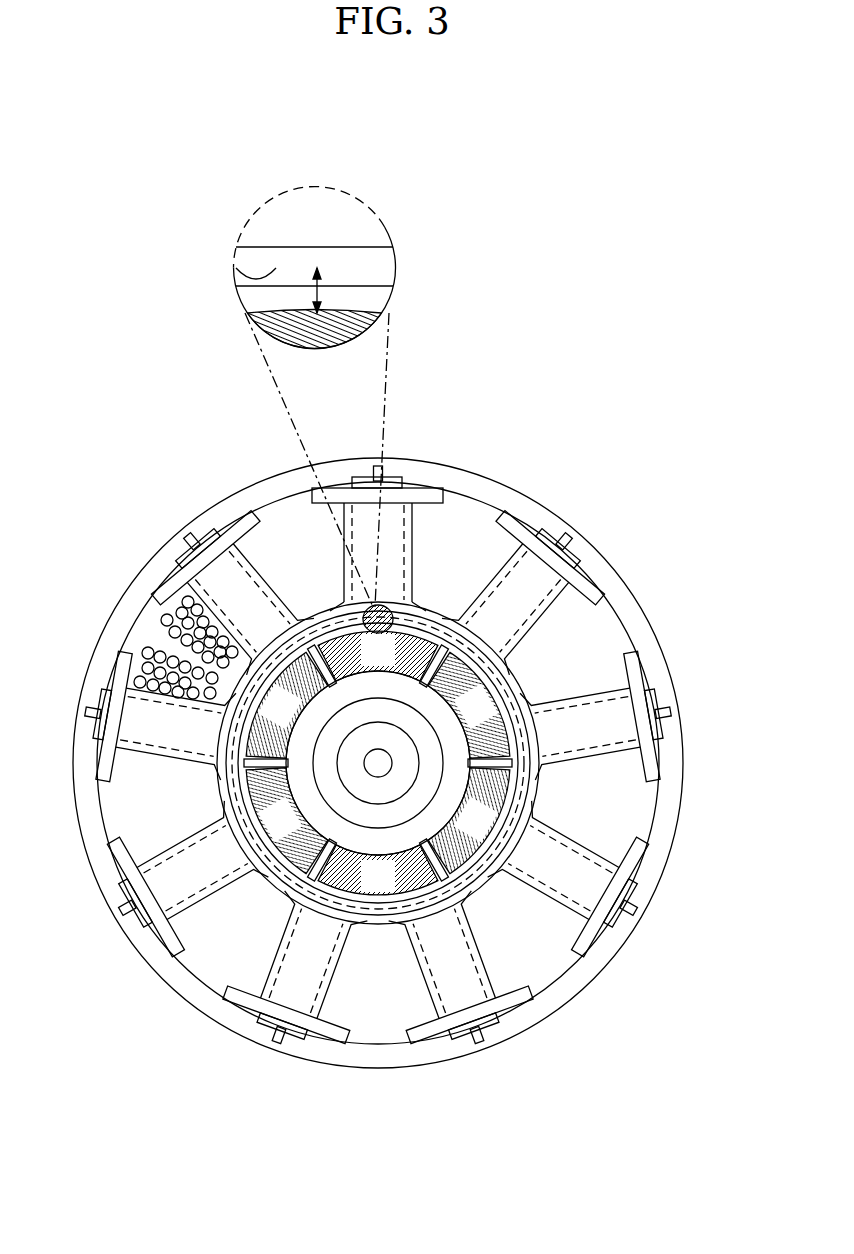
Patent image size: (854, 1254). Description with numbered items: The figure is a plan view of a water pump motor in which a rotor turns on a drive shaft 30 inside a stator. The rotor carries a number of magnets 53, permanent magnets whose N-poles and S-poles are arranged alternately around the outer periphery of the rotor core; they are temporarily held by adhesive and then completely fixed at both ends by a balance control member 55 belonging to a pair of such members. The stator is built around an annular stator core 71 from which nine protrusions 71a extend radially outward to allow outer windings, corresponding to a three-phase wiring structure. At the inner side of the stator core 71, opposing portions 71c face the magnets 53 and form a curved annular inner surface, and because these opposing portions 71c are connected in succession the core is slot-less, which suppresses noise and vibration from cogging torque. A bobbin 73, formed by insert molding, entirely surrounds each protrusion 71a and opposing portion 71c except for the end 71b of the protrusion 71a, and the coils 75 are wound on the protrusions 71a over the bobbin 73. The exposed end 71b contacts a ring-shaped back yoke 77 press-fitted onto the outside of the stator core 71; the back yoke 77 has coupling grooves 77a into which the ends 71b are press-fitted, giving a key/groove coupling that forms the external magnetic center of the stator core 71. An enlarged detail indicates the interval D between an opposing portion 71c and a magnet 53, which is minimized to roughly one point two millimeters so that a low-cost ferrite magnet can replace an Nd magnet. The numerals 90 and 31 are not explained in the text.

The stator core 71 is at (419, 593).
The protrusion 71a is at (523, 603).
The end of protrusion 71b is at (585, 542).
The opposing portion 71c is at (428, 610).
The bobbin 73 is at (413, 552).
The back yoke 77 is at (507, 503).
The coupling groove 77a is at (392, 488).
The fastener 90 is at (192, 541).
The coils 75 is at (160, 620).
The magnet 53 is at (497, 732).
The balance control member 55 is at (420, 830).
The drive shaft 30 is at (420, 790).
The shaft 31 is at (388, 752).
The interval D is at (333, 287).